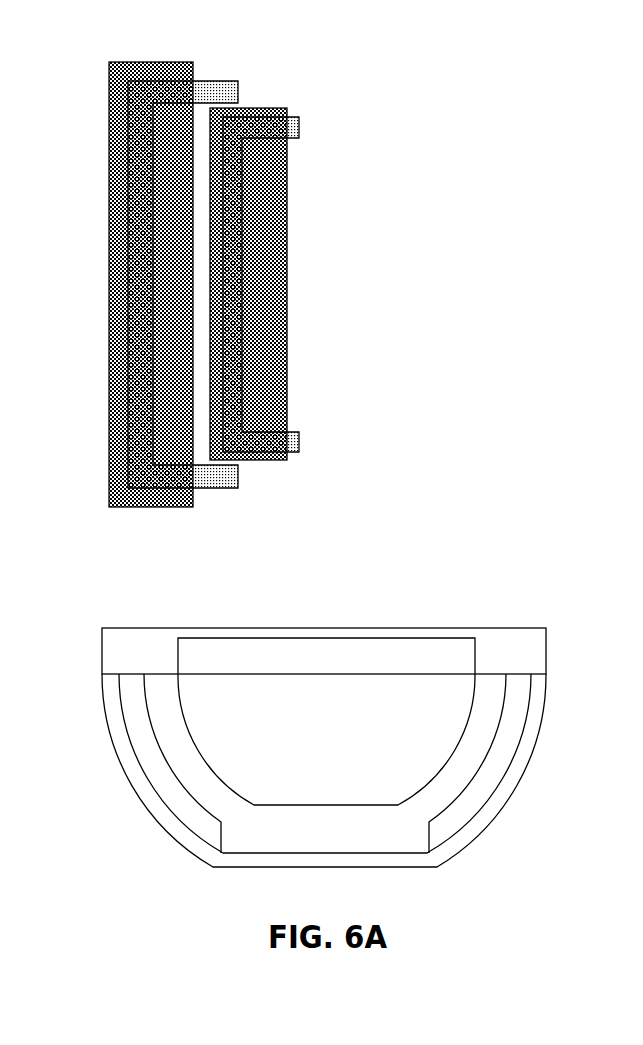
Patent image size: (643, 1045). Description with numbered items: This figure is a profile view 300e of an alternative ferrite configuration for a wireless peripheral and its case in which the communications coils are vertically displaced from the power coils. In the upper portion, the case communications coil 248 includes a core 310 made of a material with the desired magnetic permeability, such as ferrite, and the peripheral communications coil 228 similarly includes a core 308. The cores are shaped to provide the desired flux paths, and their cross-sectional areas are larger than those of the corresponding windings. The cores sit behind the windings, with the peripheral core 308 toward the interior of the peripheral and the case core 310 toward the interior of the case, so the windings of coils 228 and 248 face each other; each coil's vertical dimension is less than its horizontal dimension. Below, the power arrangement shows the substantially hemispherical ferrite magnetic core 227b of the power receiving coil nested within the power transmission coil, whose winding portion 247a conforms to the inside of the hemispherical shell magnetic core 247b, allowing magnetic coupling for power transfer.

The light-emitting device assembly 300e is at (452, 105).
The core 310 is at (175, 62).
The case communications coil 248 is at (152, 80).
The core 308 is at (277, 462).
The peripheral communications coil 228 is at (292, 114).
The magnetic core 227b is at (206, 637).
The winding portion 247a is at (143, 769).
The magnetic core 247b is at (166, 827).